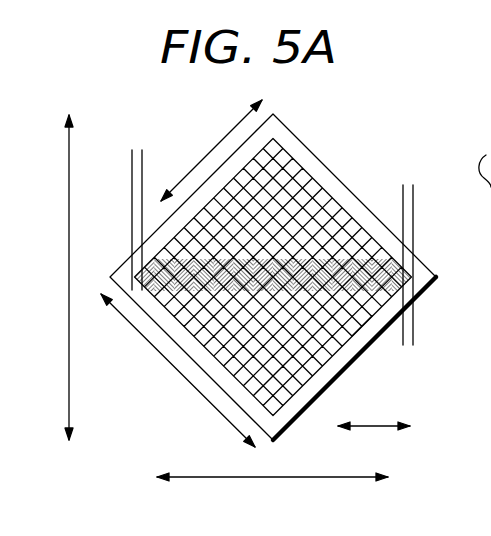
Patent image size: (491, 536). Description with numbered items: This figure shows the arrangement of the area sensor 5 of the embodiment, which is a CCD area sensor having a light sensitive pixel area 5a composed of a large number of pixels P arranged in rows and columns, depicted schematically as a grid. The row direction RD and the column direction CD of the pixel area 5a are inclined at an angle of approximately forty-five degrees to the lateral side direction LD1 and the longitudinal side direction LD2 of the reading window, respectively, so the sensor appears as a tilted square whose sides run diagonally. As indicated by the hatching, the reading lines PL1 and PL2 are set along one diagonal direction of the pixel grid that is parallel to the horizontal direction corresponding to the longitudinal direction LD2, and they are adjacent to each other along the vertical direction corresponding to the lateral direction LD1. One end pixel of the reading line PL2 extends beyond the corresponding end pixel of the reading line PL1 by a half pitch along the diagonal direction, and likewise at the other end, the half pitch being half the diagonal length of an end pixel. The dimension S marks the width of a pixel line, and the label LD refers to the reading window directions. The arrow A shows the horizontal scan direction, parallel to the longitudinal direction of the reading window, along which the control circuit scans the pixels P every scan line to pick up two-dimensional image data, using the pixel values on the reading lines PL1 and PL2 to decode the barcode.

The area sensor 5 is at (348, 180).
The light sensitive pixel area 5a is at (358, 318).
The pixels P is at (325, 352).
The reading line PL1 is at (392, 240).
The reading line PL2 is at (360, 338).
The line width S is at (180, 160).
The lateral direction LD1 is at (48, 277).
The longitudinal direction LD2 is at (272, 492).
The length direction LD is at (486, 155).
The column direction CD is at (211, 150).
The row direction RD is at (178, 370).
The arrow A is at (374, 412).